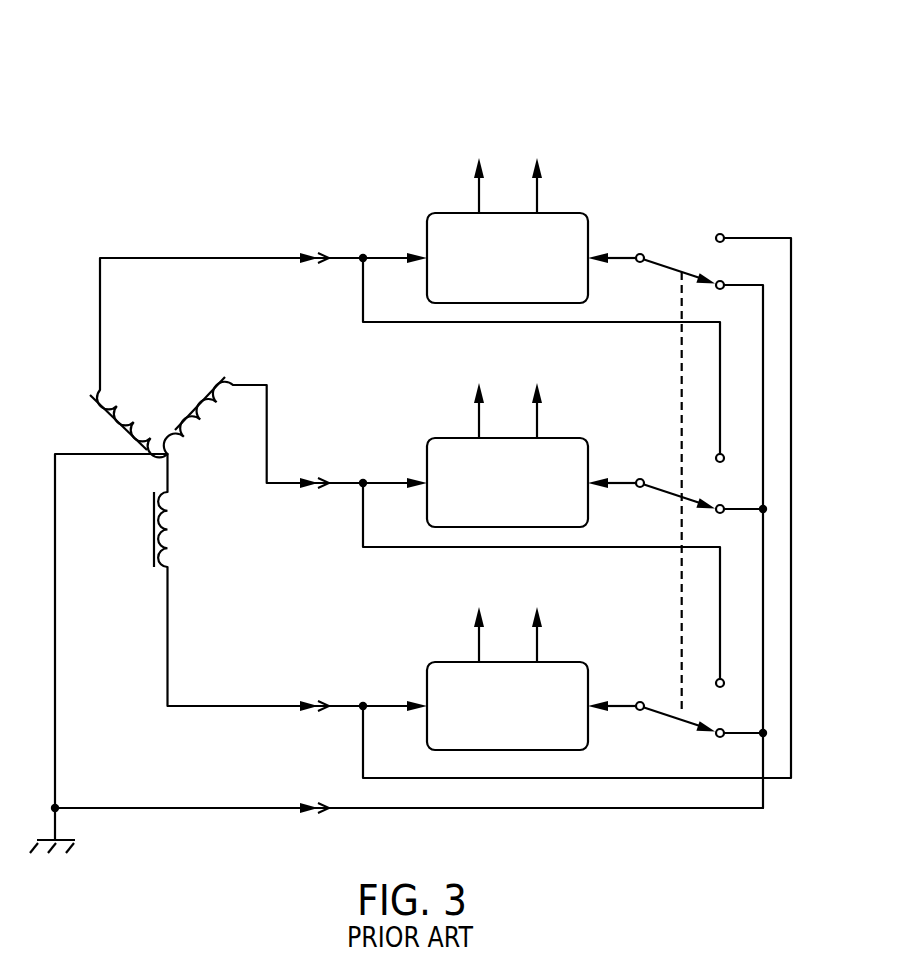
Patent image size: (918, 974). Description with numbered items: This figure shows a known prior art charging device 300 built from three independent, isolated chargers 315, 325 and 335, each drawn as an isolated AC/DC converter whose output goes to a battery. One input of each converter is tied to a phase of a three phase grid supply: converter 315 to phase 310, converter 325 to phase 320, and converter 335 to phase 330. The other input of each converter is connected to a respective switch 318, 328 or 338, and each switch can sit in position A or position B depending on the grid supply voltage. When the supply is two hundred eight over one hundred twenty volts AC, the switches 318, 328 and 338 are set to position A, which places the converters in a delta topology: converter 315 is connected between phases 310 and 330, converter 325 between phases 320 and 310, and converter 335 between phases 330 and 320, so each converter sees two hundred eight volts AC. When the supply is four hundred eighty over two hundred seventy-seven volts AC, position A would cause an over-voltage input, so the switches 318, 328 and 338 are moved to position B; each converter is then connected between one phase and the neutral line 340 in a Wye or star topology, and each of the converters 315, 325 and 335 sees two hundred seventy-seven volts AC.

The charging device 300 is at (688, 76).
The grid supply phase 310 is at (123, 423).
The isolated charger 315 is at (442, 212).
The switch 318 is at (663, 262).
The grid supply phase 320 is at (205, 415).
The isolated charger 325 is at (442, 437).
The switch 328 is at (663, 487).
The grid supply phase 330 is at (168, 530).
The isolated charger 335 is at (442, 661).
The switch 338 is at (663, 710).
The neutral line 340 is at (57, 806).